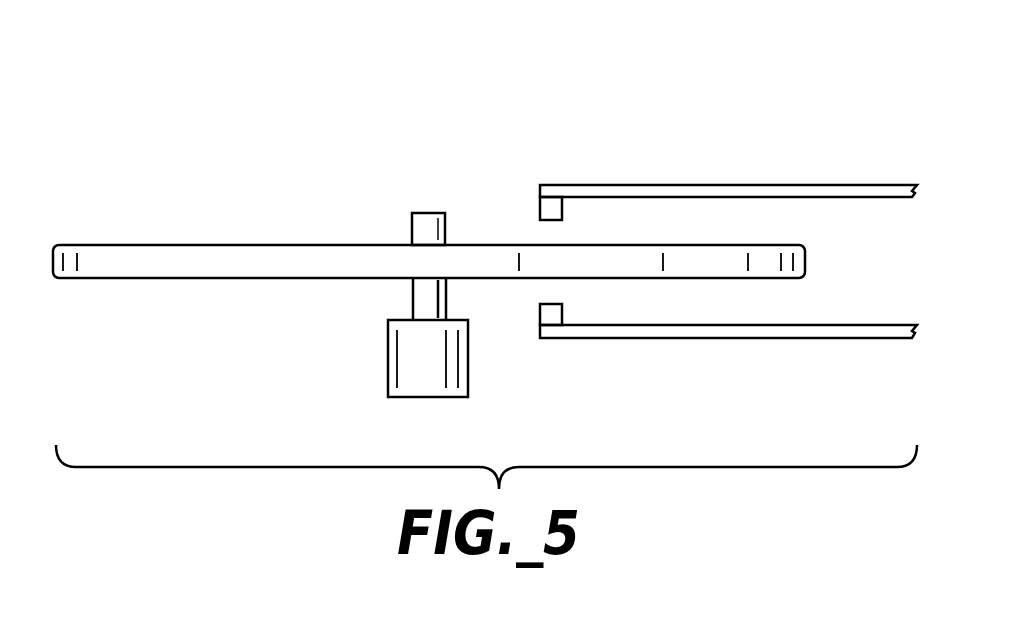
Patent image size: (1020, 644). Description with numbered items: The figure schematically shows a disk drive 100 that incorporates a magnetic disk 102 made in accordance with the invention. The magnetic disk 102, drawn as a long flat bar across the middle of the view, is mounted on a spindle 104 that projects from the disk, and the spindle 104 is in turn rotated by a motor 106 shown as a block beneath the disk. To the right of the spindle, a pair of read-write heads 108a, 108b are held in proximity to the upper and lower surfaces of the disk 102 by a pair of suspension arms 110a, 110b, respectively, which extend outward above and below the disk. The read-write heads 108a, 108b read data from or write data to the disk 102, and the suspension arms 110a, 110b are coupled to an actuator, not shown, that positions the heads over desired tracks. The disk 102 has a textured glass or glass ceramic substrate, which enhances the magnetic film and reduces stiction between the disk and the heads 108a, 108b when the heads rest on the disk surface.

The disk drive 100 is at (252, 126).
The magnetic disk 102 is at (90, 268).
The spindle 104 is at (425, 220).
The motor 106 is at (388, 355).
The read-write head 108a is at (562, 203).
The read-write head 108b is at (562, 318).
The suspension arm 110a is at (643, 185).
The suspension arm 110b is at (635, 338).